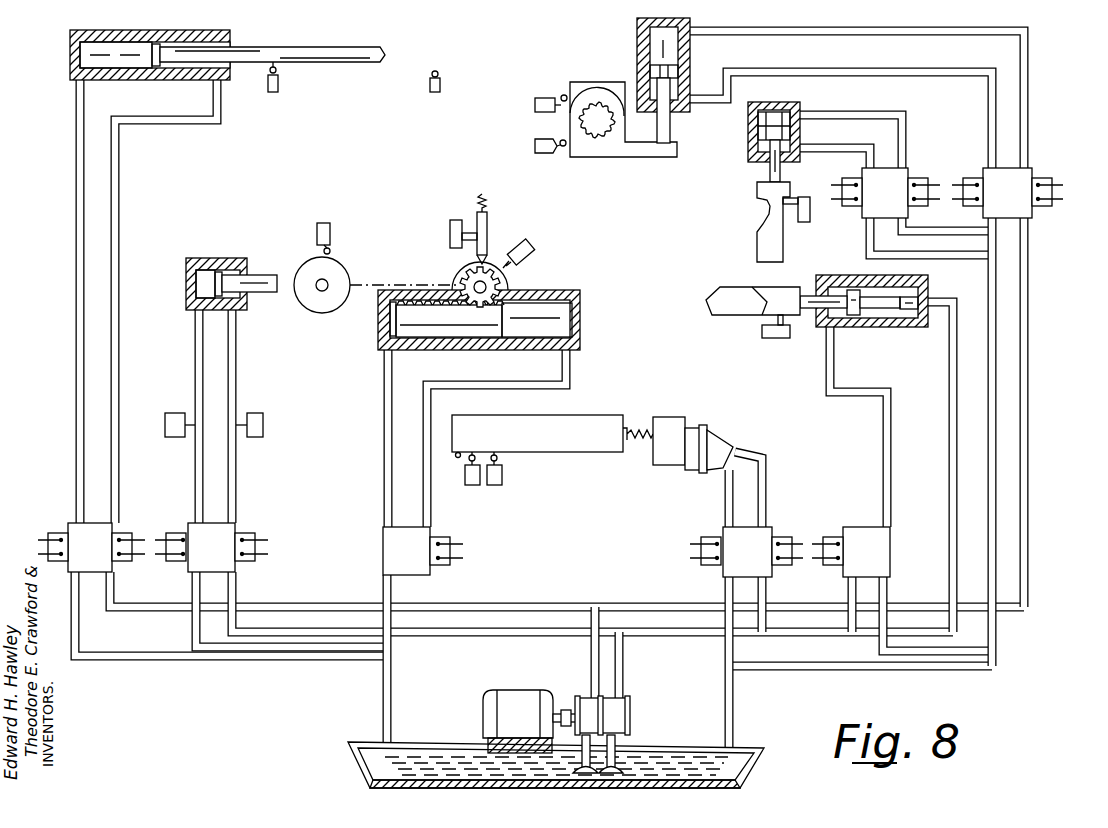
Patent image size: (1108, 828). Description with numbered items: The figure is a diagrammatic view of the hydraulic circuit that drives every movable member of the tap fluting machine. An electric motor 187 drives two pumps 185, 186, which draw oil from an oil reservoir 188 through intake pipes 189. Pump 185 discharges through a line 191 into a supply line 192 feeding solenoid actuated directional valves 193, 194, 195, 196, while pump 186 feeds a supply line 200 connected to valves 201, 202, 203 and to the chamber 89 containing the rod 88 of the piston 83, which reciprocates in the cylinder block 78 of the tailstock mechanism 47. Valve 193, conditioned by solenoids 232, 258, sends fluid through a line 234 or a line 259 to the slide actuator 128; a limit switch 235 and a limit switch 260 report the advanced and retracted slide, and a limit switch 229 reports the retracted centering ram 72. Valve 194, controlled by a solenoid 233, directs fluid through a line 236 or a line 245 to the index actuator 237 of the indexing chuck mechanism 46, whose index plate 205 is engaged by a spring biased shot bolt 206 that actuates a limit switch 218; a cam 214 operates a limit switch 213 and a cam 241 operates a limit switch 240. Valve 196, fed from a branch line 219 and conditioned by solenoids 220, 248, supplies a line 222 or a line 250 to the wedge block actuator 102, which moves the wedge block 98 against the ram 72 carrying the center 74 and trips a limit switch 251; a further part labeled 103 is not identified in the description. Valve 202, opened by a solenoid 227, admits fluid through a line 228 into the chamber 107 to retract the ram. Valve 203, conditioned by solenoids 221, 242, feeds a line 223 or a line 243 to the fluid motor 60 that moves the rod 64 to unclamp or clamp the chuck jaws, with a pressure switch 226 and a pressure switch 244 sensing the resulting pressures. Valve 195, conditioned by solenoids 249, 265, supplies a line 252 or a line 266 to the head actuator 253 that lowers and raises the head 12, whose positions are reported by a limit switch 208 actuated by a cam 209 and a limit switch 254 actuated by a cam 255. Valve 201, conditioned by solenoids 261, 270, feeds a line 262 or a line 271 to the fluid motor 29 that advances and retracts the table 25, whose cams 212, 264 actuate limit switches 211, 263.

The head 12 is at (606, 84).
The table 25 is at (575, 418).
The fluid motor 29 is at (705, 440).
The indexing chuck mechanism 46 is at (560, 281).
The tailstock mechanism 47 is at (730, 346).
The fluid motor 60 is at (209, 259).
The rod 64 is at (262, 294).
The centering ram 72 is at (722, 314).
The center 74 is at (715, 288).
The cylinder block 78 is at (928, 283).
The piston 83 is at (853, 290).
The rod 88 is at (892, 327).
The chamber 89 is at (936, 300).
The wedge block 98 is at (762, 240).
The fluid actuator 102 is at (746, 133).
The piston rod 103 is at (752, 142).
The chamber 107 is at (848, 327).
The slide actuator 128 is at (160, 27).
The pump 185 is at (585, 702).
The pump 186 is at (630, 718).
The electric motor 187 is at (518, 690).
The oil reservoir 188 is at (738, 752).
The intake pipes 189 is at (618, 748).
The line 191 is at (590, 646).
The supply line 192 is at (1028, 398).
The solenoid actuated directional valve 193 is at (133, 520).
The solenoid actuated directional valve 194 is at (375, 512).
The solenoid actuated directional valve 195 is at (982, 166).
The solenoid actuated directional valve 196 is at (925, 153).
The supply line 200 is at (720, 637).
The solenoid actuated directional valve 201 is at (699, 521).
The solenoid actuated directional valve 202 is at (851, 522).
The solenoid actuated directional valve 203 is at (270, 529).
The indexing plate 205 is at (456, 280).
The shot bolt 206 is at (488, 226).
The limit switch 208 is at (534, 146).
The cam 209 is at (563, 147).
The limit switch 211 is at (503, 479).
The cam 212 is at (515, 452).
The limit switch 213 is at (330, 232).
The cam 214 is at (322, 257).
The limit switch 218 is at (452, 220).
The branch line 219 is at (950, 238).
The solenoid 220 is at (926, 178).
The solenoid 221 is at (182, 535).
The line 222 is at (876, 115).
The line 223 is at (195, 456).
The pressure switch 226 is at (170, 412).
The solenoid 227 is at (834, 537).
The line 228 is at (884, 440).
The limit switch 229 is at (770, 338).
The solenoid 232 is at (60, 530).
The solenoid 233 is at (452, 551).
The line 234 is at (76, 241).
The limit switch 235 is at (431, 91).
The line 236 is at (432, 516).
The fluid actuator 237 is at (582, 315).
The limit switch 240 is at (535, 246).
The cam 241 is at (507, 268).
The solenoid 242 is at (262, 552).
The line 243 is at (236, 482).
The pressure switch 244 is at (263, 420).
The line 245 is at (384, 452).
The solenoid 248 is at (858, 206).
The solenoid 249 is at (1038, 206).
The line 250 is at (862, 150).
The limit switch 251 is at (803, 224).
The line 252 is at (962, 36).
The fluid actuator 253 is at (698, 54).
The limit switch 254 is at (534, 105).
The cam 255 is at (561, 96).
The solenoid 258 is at (118, 562).
The line 259 is at (120, 242).
The limit switch 260 is at (279, 86).
The solenoid 261 is at (778, 566).
The line 262 is at (768, 478).
The limit switch 263 is at (474, 486).
The cam 264 is at (461, 453).
The solenoid 265 is at (977, 204).
The line 266 is at (888, 72).
The solenoid 270 is at (703, 549).
The line 271 is at (726, 486).